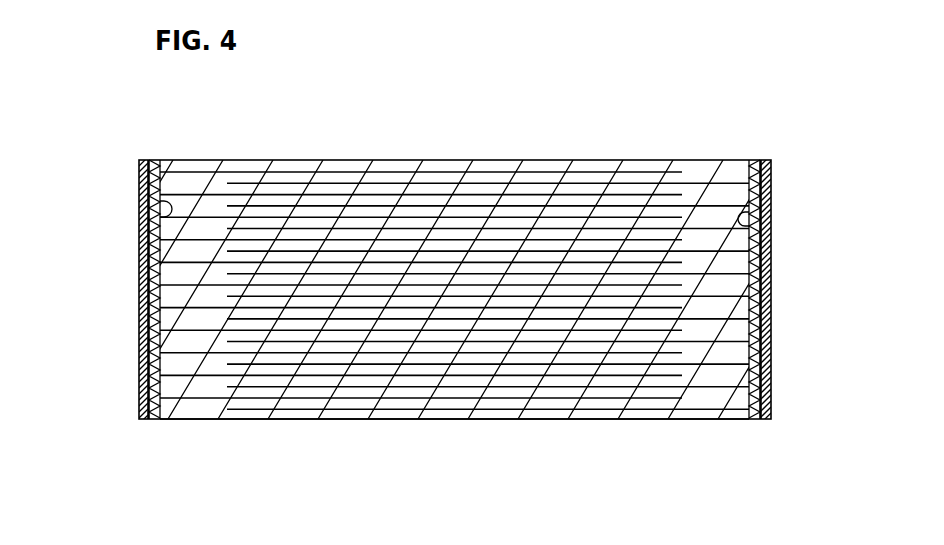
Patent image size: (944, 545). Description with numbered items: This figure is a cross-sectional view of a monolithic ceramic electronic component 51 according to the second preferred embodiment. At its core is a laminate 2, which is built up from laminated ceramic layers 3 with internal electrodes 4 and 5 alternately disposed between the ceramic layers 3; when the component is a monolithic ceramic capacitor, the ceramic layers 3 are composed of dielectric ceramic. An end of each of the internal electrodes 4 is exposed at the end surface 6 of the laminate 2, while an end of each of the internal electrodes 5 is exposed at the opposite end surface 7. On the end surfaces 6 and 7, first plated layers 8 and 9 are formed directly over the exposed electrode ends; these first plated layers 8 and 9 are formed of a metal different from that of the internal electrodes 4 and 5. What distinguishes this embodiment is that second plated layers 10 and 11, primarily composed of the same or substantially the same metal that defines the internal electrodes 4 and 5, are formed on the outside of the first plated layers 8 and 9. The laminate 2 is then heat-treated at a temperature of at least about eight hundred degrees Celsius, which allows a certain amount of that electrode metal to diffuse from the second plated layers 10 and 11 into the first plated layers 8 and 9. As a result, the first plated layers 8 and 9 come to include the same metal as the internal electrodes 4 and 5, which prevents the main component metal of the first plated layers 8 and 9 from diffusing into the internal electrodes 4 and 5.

The monolithic ceramic electronic component 51 is at (436, 152).
The laminate 2 is at (589, 160).
The ceramic layers 3 is at (730, 173).
The internal electrodes 4 is at (203, 400).
The internal electrodes 5 is at (705, 410).
The end surface 6 is at (157, 213).
The end surface 7 is at (748, 226).
The first plated layer 8 is at (150, 362).
The first plated layer 9 is at (752, 360).
The second plated layer 10 is at (143, 308).
The second plated layer 11 is at (766, 322).